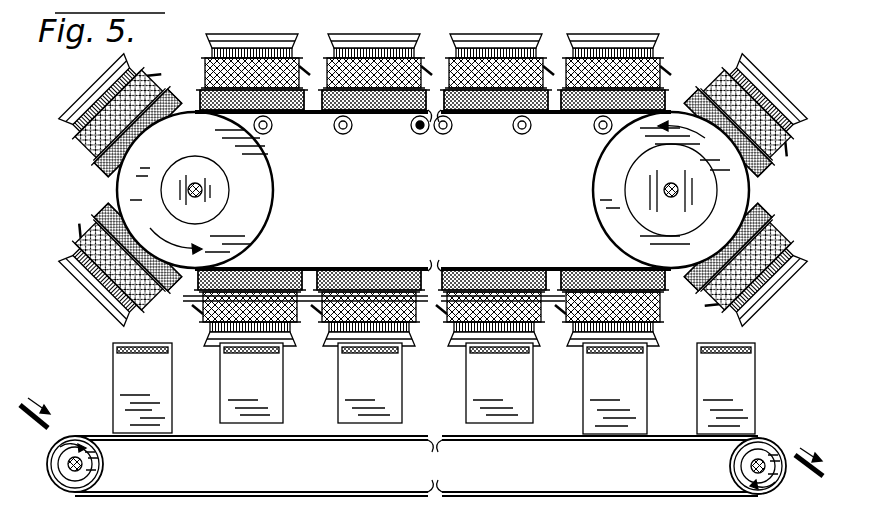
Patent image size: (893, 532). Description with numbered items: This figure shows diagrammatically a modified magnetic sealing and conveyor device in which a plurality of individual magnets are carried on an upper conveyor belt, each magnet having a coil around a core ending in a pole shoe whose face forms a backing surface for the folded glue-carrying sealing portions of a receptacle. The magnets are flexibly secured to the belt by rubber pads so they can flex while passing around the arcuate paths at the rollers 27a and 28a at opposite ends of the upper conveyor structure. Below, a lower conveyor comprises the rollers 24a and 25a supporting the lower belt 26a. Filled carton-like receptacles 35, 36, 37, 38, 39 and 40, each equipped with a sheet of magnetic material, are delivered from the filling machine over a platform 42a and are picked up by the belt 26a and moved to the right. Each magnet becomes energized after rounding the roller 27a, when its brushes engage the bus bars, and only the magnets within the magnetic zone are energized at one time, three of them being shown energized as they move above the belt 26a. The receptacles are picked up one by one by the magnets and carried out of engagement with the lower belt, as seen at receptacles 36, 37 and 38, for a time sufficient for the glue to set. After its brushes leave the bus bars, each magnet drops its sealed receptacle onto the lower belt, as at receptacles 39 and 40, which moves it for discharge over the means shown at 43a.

The roller 24a is at (100, 464).
The roller 25a is at (738, 466).
The lower conveyor belt 26a is at (416, 466).
The roller 27a is at (270, 182).
The roller 28a is at (607, 190).
The receptacle 35 is at (142, 388).
The receptacle 36 is at (251, 383).
The receptacle 37 is at (370, 383).
The receptacle 38 is at (499, 383).
The receptacle 39 is at (615, 388).
The receptacle 40 is at (726, 388).
The platform 42a is at (52, 414).
The discharge means 43a is at (818, 478).